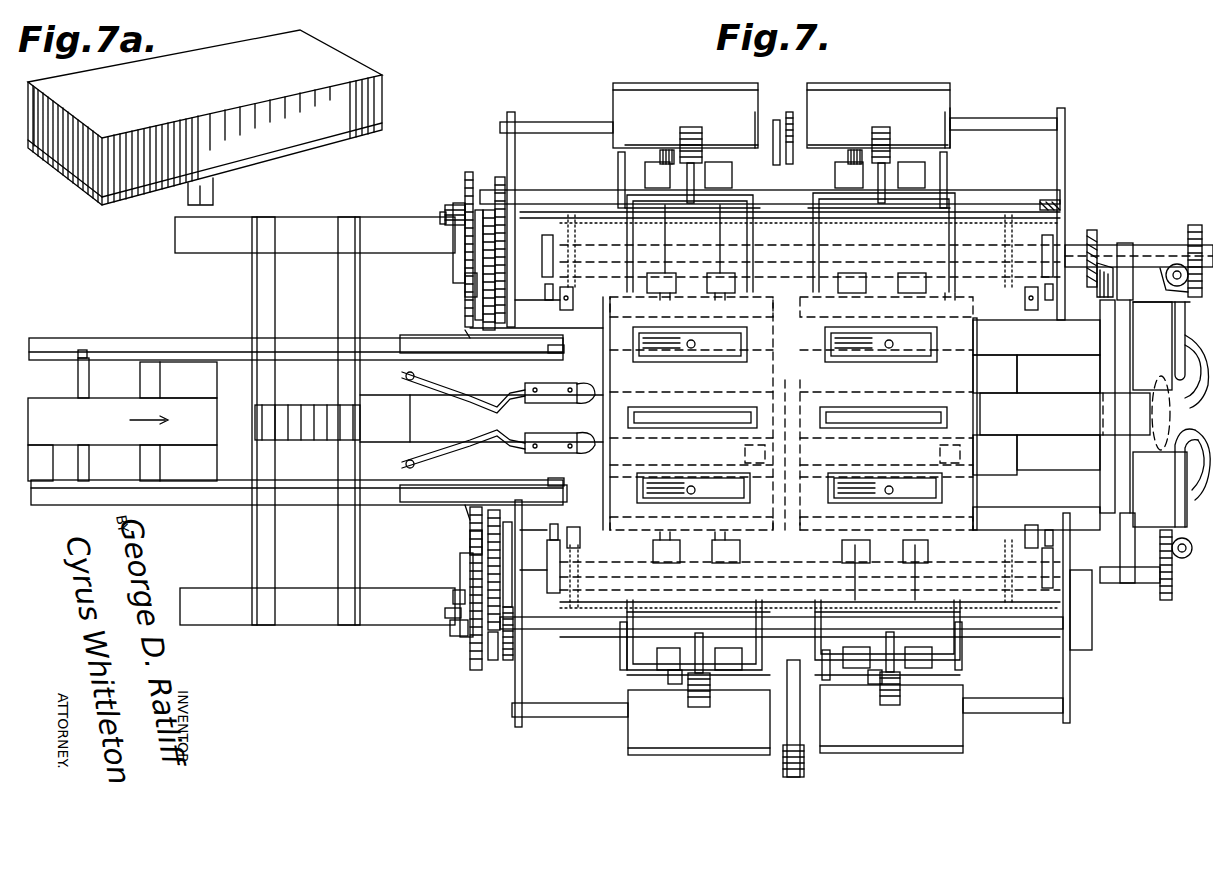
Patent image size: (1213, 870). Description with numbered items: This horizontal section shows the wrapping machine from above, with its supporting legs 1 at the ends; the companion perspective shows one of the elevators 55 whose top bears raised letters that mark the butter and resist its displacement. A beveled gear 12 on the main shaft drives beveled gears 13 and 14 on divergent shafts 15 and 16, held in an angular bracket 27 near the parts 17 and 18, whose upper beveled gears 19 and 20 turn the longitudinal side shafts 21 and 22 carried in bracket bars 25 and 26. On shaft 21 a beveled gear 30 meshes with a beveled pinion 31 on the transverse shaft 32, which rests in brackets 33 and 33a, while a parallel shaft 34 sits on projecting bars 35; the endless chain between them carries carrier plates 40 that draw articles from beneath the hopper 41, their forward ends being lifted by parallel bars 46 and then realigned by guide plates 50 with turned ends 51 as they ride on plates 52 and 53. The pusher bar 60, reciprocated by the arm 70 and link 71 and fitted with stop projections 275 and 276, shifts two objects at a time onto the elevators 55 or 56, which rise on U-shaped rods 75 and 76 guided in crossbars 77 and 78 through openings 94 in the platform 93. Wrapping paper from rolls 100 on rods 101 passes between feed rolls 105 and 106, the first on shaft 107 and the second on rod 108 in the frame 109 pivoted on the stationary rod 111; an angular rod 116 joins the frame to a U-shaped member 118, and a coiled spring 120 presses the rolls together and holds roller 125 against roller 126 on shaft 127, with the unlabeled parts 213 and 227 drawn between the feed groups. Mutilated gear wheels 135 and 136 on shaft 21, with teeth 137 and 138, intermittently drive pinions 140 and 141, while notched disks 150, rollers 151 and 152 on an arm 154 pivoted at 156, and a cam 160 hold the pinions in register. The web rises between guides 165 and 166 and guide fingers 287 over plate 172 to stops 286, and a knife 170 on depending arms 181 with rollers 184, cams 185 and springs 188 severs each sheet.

In FIG. 7, the supporting legs 1 is at (505, 190).
In FIG. 7, the beveled gear 12 is at (1159, 425).
In FIG. 7, the beveled gear 13 is at (1198, 371).
In FIG. 7, the beveled gear 14 is at (1193, 478).
In FIG. 7, the shaft 15 is at (1192, 341).
In FIG. 7, the shaft 16 is at (1202, 473).
In FIG. 7, the bevel gear 17 is at (1170, 264).
In FIG. 7, the bevel gear 18 is at (1178, 600).
In FIG. 7, the beveled gear 19 is at (1195, 225).
In FIG. 7, the beveled gear 20 is at (1182, 560).
In FIG. 7, the horizontal shaft 21 is at (1150, 245).
In FIG. 7, the horizontal shaft 22 is at (1130, 583).
In FIG. 7, the bracket bar 25 is at (510, 112).
In FIG. 7, the bracket bar 26 is at (518, 727).
In FIG. 7, the angular bracket 27 is at (1161, 414).
In FIG. 7, the beveled gear 30 is at (1092, 230).
In FIG. 7, the beveled pinion 31 is at (1105, 263).
In FIG. 7, the transverse shaft 32 is at (1058, 374).
In FIG. 7, the bracket 33 is at (1053, 378).
In FIG. 7, the bracket 33a is at (1100, 460).
In FIG. 7, the shaft 34 is at (78, 470).
In FIG. 7, the projecting bars 35 is at (118, 342).
In FIG. 7, the carrier plates 40 is at (52, 400).
In FIG. 7, the hopper 41 is at (306, 222).
In FIG. 7, the parallel bars 46 is at (200, 396).
In FIG. 7, the guide plates 50 is at (463, 423).
In FIG. 7, the turned ends 51 is at (580, 417).
In FIG. 7, the plate 52 is at (750, 454).
In FIG. 7, the plate 53 is at (767, 379).
In FIG. 7A, the elevators 55 is at (97, 122).
In FIG. 7, the elevators 55 is at (789, 488).
In FIG. 7, the elevators 56 is at (785, 344).
In FIG. 7, the pusher bar 60 is at (784, 415).
In FIG. 7, the arm 70 is at (792, 777).
In FIG. 7, the link 71 is at (827, 680).
In FIG. 7A, the U-shaped rod 75 is at (188, 198).
In FIG. 7, the U-shaped rod 75 is at (688, 486).
In FIG. 7, the U-shaped rod 76 is at (691, 348).
In FIG. 7, the crossbar 77 is at (470, 522).
In FIG. 7, the crossbar 78 is at (470, 334).
In FIG. 7, the platform 93 is at (600, 500).
In FIG. 7, the openings 94 is at (786, 430).
In FIG. 7, the rolls 100 is at (683, 83).
In FIG. 7, the rods 101 is at (563, 122).
In FIG. 7, the feed roll 105 is at (618, 180).
In FIG. 7, the feed roll 106 is at (645, 165).
In FIG. 7, the shaft 107 is at (960, 160).
In FIG. 7, the rod 108 is at (720, 162).
In FIG. 7, the frame 109 is at (700, 160).
In FIG. 7, the stationary rod 111 is at (1050, 200).
In FIG. 7, the angular rod 116 is at (665, 150).
In FIG. 7, the U-shaped frame-like member 118 is at (635, 241).
In FIG. 7, the coiled spring 120 is at (685, 127).
In FIG. 7, the roller 125 is at (803, 416).
In FIG. 7, the roller 126 is at (870, 414).
In FIG. 7, the shaft 127 is at (691, 414).
In FIG. 7, the mutilated gear wheel 135 is at (483, 250).
In FIG. 7, the mutilated gear wheel 136 is at (537, 435).
In FIG. 7, the gear teeth 137 is at (491, 660).
In FIG. 7, the gear teeth 138 is at (536, 327).
In FIG. 7, the gear pinion 140 is at (483, 418).
In FIG. 7, the gear pinion 141 is at (500, 177).
In FIG. 7, the notched disks 150 is at (467, 172).
In FIG. 7, the roller 151 is at (440, 215).
In FIG. 7, the roller 152 is at (465, 285).
In FIG. 7, the arm 154 is at (453, 595).
In FIG. 7, the pivot 156 is at (450, 205).
In FIG. 7, the cam 160 is at (453, 243).
In FIG. 7, the guide member 165 is at (758, 417).
In FIG. 7, the guide member 166 is at (817, 428).
In FIG. 7, the cutting knife 170 is at (790, 403).
In FIG. 7, the plate 172 is at (978, 545).
In FIG. 7, the depending arms 181 is at (799, 417).
In FIG. 7, the rollers 184 is at (801, 418).
In FIG. 7, the cams 185 is at (797, 417).
In FIG. 7, the coiled springs 188 is at (790, 412).
In FIG. 7, the rod 213 is at (790, 112).
In FIG. 7, the rod 227 is at (776, 120).
In FIG. 7, the projections 275 is at (745, 452).
In FIG. 7, the projections 276 is at (940, 452).
In FIG. 7, the stops 286 is at (787, 408).
In FIG. 7, the guide fingers 287 is at (810, 417).